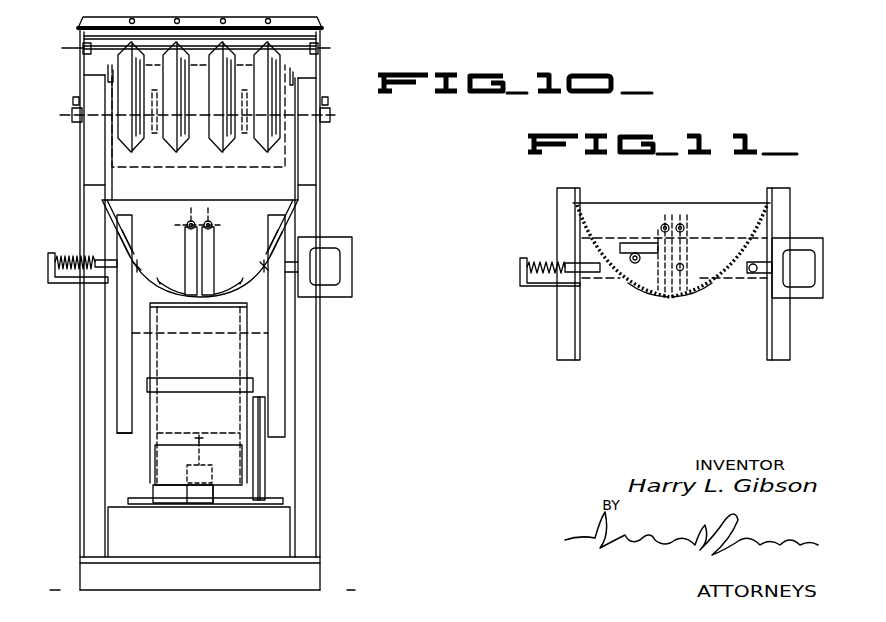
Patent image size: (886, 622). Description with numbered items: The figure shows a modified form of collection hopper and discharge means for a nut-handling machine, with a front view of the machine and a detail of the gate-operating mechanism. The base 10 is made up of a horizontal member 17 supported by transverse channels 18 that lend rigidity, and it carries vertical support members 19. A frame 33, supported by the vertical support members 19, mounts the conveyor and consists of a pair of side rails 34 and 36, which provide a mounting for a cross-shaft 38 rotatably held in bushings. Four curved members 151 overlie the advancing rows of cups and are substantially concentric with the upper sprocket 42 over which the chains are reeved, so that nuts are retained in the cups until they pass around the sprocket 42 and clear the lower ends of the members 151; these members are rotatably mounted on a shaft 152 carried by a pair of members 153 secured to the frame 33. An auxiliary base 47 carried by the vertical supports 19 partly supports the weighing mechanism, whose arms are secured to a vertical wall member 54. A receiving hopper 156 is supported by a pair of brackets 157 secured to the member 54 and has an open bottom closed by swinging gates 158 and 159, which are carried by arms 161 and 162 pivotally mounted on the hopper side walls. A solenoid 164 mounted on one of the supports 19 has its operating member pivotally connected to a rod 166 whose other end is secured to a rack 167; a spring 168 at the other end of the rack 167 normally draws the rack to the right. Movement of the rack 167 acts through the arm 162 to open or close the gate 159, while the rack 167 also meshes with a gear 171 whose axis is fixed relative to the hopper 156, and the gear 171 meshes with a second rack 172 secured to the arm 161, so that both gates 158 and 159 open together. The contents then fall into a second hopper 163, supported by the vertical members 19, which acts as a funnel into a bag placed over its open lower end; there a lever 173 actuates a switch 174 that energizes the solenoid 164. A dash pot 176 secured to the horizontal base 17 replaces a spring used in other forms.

In FIG. 10, the base 10 is at (322, 543).
In FIG. 10, the horizontal member 17 is at (80, 553).
In FIG. 10, the transverse channels 18 is at (305, 578).
In FIG. 10, the vertical support members 19 is at (84, 350).
In FIG. 11, the vertical support members 19 is at (560, 330).
In FIG. 10, the frame 33 is at (323, 160).
In FIG. 10, the side rail 34 is at (88, 164).
In FIG. 10, the side rail 36 is at (308, 174).
In FIG. 10, the cross-shaft 38 is at (330, 118).
In FIG. 10, the upper sprocket 42 is at (156, 135).
In FIG. 10, the auxiliary base 47 is at (283, 501).
In FIG. 10, the vertical wall member 54 is at (140, 424).
In FIG. 10, the curved members 151 is at (266, 147).
In FIG. 10, the shaft 152 is at (322, 52).
In FIG. 10, the members 153 is at (84, 67).
In FIG. 10, the receiving hopper 156 is at (157, 200).
In FIG. 10, the brackets 157 is at (117, 321).
In FIG. 10, the swinging gate 158 is at (172, 284).
In FIG. 11, the swinging gate 158 is at (634, 292).
In FIG. 10, the swinging gate 159 is at (222, 284).
In FIG. 11, the swinging gate 159 is at (689, 292).
In FIG. 10, the arm 161 is at (185, 232).
In FIG. 11, the arm 161 is at (668, 222).
In FIG. 10, the arm 162 is at (214, 232).
In FIG. 11, the arm 162 is at (684, 227).
In FIG. 10, the second hopper 163 is at (171, 473).
In FIG. 10, the solenoid 164 is at (330, 248).
In FIG. 11, the solenoid 164 is at (803, 249).
In FIG. 10, the rod 166 is at (262, 278).
In FIG. 11, the rod 166 is at (745, 274).
In FIG. 10, the rack 167 is at (136, 276).
In FIG. 11, the rack 167 is at (597, 273).
In FIG. 10, the spring 168 is at (70, 252).
In FIG. 11, the spring 168 is at (542, 259).
In FIG. 11, the gear 171 is at (633, 252).
In FIG. 11, the second rack 172 is at (645, 243).
In FIG. 10, the lever 173 is at (186, 378).
In FIG. 10, the switch 174 is at (262, 464).
In FIG. 10, the dash pot 176 is at (213, 494).